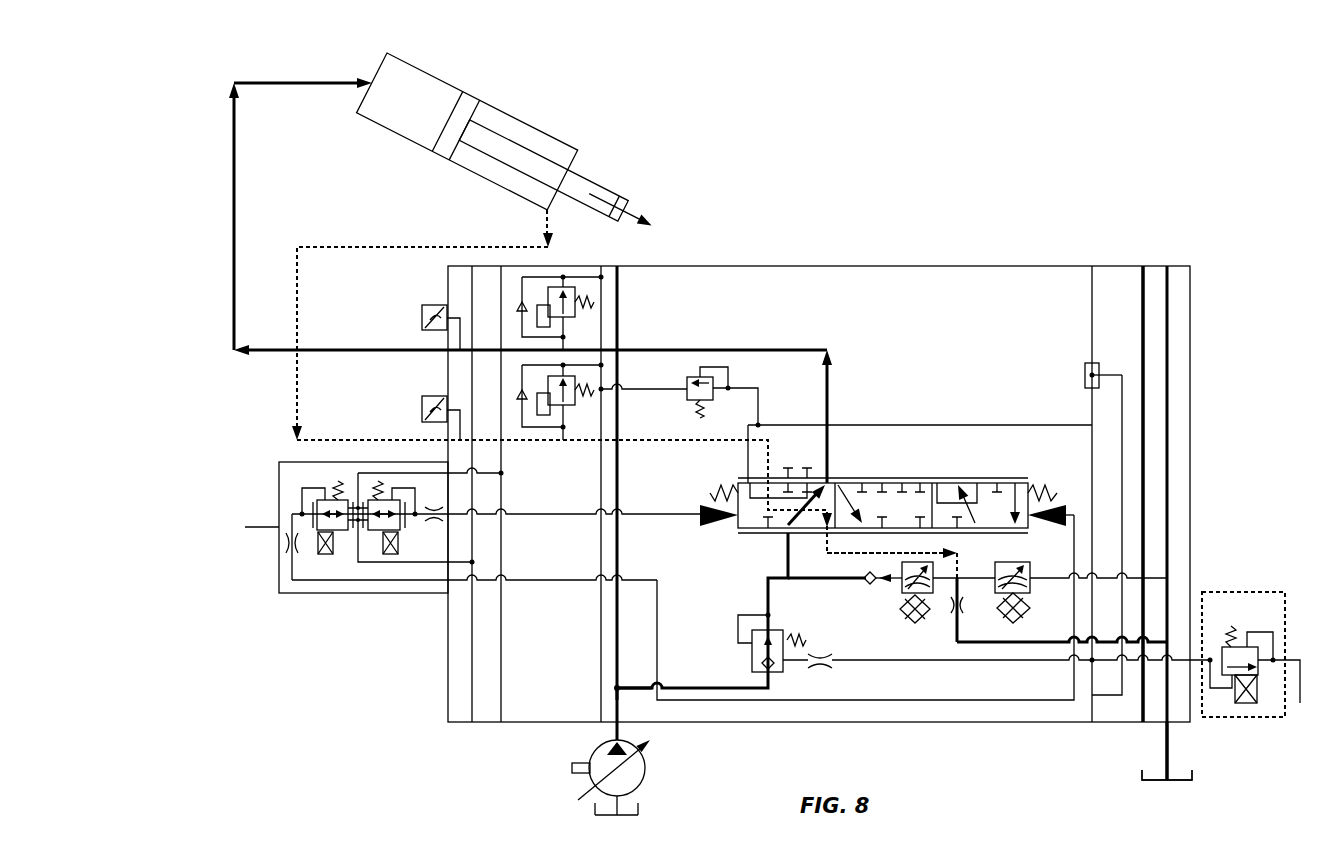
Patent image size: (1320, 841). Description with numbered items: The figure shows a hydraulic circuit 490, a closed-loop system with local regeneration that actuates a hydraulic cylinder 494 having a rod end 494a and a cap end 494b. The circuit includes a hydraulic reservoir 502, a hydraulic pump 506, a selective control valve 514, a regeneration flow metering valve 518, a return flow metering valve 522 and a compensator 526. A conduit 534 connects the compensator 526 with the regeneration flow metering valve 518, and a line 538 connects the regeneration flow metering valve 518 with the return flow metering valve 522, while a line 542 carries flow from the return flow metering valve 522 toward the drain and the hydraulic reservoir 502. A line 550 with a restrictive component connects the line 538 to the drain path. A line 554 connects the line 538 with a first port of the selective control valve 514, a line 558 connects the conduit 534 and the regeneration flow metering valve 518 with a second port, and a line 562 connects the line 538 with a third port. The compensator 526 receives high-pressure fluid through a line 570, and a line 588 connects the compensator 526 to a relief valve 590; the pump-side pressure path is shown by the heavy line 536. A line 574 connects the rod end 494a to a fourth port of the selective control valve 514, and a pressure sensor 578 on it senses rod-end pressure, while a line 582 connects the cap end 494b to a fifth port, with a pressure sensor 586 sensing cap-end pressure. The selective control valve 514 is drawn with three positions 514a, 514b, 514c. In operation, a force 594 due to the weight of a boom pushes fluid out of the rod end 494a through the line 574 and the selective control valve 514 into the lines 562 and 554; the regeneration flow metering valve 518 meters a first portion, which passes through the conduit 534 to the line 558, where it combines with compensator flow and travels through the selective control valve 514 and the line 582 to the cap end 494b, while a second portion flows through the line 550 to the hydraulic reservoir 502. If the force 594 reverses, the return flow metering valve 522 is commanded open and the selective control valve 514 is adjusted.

The hydraulic circuit 490 is at (693, 98).
The hydraulic cylinder 494 is at (524, 130).
The rod end 494a is at (548, 128).
The cap end 494b is at (433, 72).
The force 594 is at (618, 192).
The line 582 is at (720, 349).
The pressure sensor 586 is at (437, 305).
The pressure sensor 578 is at (437, 396).
The line 574 is at (635, 440).
The selective control valve 514 is at (887, 446).
The first valve position 514a is at (799, 455).
The second valve position 514b is at (886, 470).
The third valve position 514c is at (990, 470).
The line 554 is at (786, 556).
The line 558 is at (778, 572).
The conduit 534 is at (772, 590).
The line 562 is at (838, 548).
The line 538 is at (945, 585).
The regeneration flow metering valve 518 is at (893, 588).
The return flow metering valve 522 is at (1005, 563).
The line 542 is at (1146, 540).
The compensator 526 is at (748, 663).
The line 570 is at (678, 686).
The pump pressure line 536 is at (614, 627).
The line 550 is at (1012, 643).
The line 588 is at (1040, 662).
The relief valve 590 is at (1232, 718).
The hydraulic reservoir 502 is at (1153, 781).
The hydraulic pump 506 is at (605, 815).